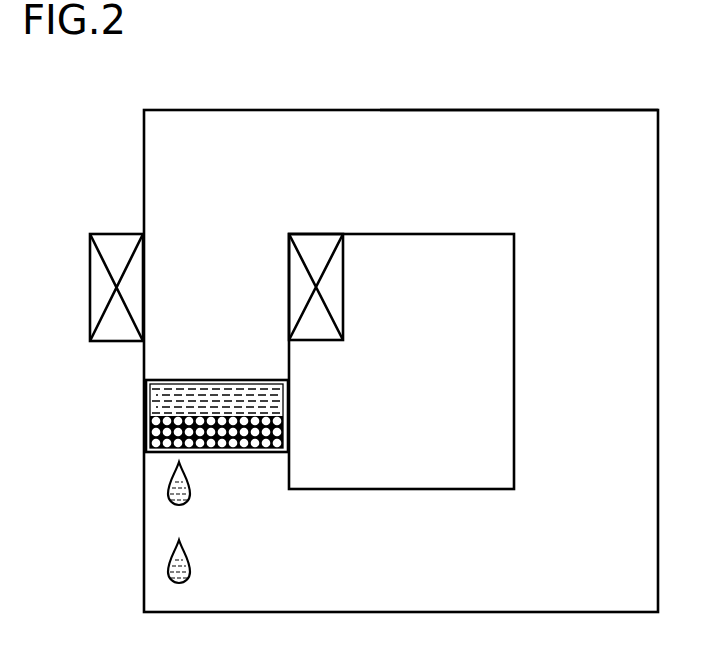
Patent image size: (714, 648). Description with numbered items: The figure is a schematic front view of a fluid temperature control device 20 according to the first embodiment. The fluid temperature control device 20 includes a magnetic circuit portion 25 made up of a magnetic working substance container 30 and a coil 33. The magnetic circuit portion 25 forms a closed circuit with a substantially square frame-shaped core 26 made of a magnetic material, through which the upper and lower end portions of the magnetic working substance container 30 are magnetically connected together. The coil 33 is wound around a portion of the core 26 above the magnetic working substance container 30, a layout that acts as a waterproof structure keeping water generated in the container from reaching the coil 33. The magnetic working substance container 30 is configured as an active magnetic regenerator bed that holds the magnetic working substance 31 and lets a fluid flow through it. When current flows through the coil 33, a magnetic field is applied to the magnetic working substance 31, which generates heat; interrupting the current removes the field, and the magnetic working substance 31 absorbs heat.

The fluid temperature control device 20 is at (260, 89).
The magnetic circuit portion 25 is at (493, 110).
The core 26 is at (597, 110).
The coil 33 is at (110, 234).
The magnetic working substance container 30 is at (206, 425).
The magnetic working substance 31 is at (268, 431).